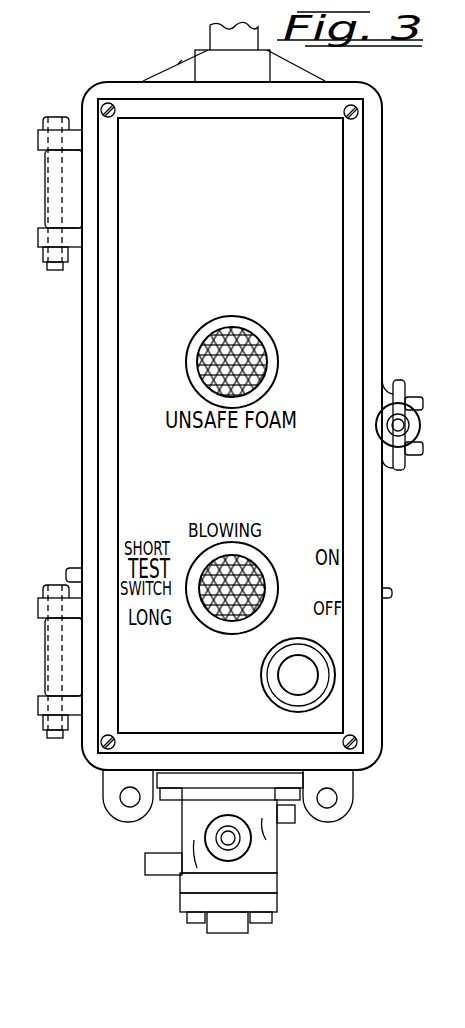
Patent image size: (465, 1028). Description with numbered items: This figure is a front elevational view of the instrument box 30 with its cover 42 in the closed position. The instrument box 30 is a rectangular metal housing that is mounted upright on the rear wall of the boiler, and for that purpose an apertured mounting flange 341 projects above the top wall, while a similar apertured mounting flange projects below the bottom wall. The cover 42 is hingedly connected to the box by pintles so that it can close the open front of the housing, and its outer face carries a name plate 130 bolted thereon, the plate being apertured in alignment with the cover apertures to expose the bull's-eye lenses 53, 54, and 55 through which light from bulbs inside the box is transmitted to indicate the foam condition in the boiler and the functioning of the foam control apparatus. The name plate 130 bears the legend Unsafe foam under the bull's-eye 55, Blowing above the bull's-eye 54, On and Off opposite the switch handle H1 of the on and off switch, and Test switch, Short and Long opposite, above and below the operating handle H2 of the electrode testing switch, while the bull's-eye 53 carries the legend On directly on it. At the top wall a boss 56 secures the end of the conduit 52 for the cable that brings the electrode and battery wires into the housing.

The instrument box 30 is at (387, 172).
The cover 42 is at (377, 287).
The name plate 130 is at (318, 275).
The boss 56 is at (257, 70).
The conduit 52 is at (230, 33).
The mounting flange 341 is at (179, 63).
The bull's-eye lens 55 is at (265, 358).
The bull's-eye lens 54 is at (255, 572).
The bull's-eye lens 53 is at (290, 690).
The switch handle H1 is at (386, 592).
The operating handle H2 is at (72, 568).